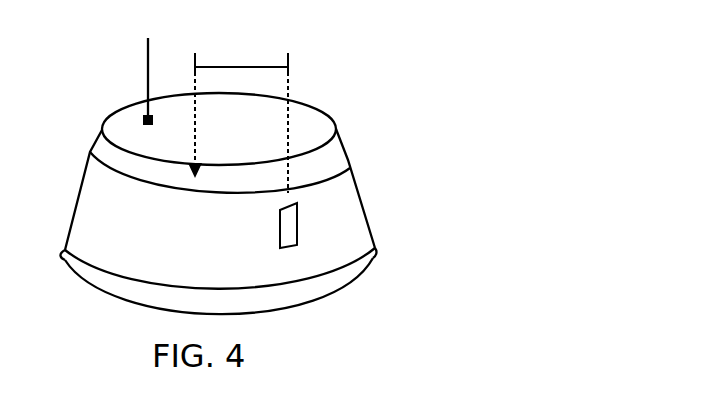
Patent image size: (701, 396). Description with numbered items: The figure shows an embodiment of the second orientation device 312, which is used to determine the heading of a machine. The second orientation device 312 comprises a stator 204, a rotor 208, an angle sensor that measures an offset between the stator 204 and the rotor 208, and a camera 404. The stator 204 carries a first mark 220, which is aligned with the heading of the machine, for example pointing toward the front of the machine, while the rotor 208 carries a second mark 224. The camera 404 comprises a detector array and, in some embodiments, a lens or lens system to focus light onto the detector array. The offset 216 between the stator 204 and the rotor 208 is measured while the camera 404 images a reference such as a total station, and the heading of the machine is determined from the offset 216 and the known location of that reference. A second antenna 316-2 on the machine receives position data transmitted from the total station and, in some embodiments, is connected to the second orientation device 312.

The second orientation device 312 is at (530, 76).
The stator 204 is at (308, 117).
The rotor 208 is at (350, 170).
The second antenna 316-2 is at (147, 82).
The offset 216 is at (228, 66).
The first mark 220 is at (192, 170).
The second mark 224 is at (288, 193).
The camera 404 is at (297, 227).